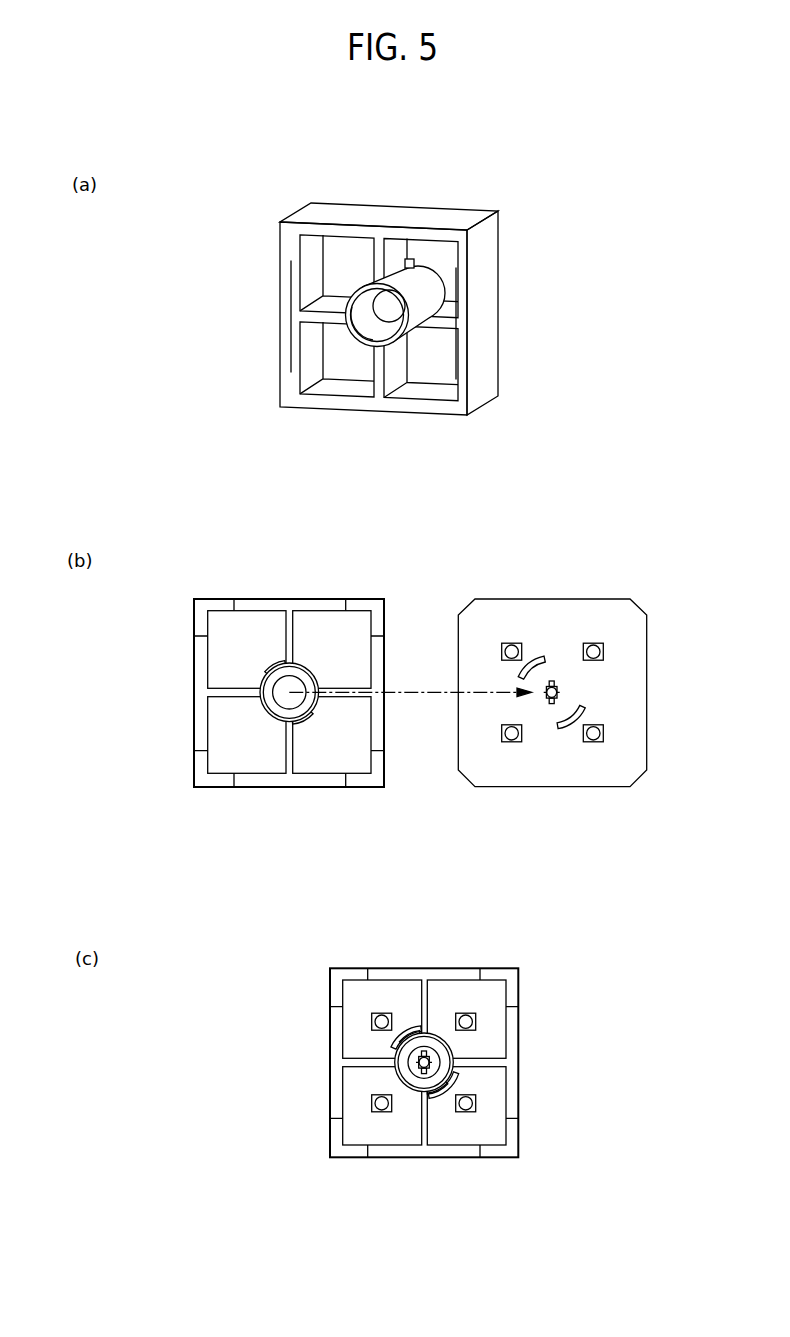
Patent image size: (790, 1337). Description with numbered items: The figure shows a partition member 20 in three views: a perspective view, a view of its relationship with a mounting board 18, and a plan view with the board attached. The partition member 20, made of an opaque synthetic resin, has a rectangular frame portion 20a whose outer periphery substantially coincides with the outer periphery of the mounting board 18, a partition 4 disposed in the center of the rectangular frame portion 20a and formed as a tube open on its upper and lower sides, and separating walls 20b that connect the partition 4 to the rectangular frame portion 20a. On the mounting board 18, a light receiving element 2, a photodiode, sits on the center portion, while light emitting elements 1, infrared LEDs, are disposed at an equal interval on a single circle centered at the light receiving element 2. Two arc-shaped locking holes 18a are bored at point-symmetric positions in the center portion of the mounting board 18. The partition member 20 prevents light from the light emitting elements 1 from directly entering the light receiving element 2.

The light emitting element 1 is at (512, 650).
The light receiving element 2 is at (558, 692).
The partition 4 is at (408, 285).
The mounting board 18 is at (618, 585).
The locking hole 18a is at (541, 658).
The partition member 20 is at (353, 684).
The rectangular frame portion 20a is at (297, 328).
The separating wall 20b is at (393, 247).